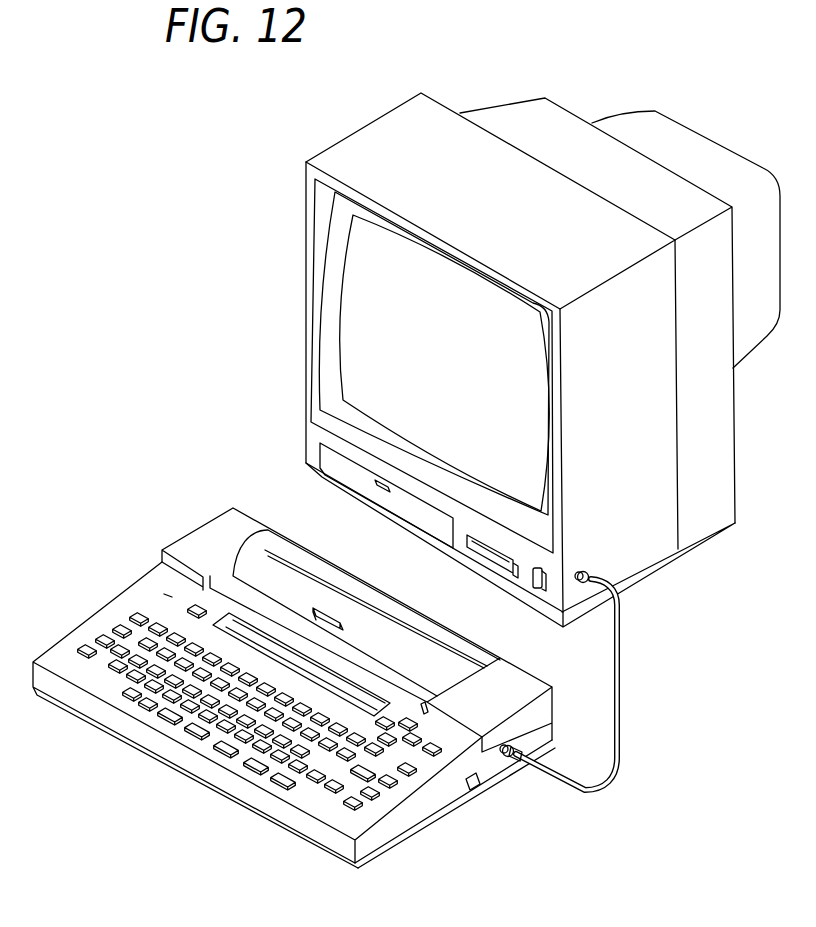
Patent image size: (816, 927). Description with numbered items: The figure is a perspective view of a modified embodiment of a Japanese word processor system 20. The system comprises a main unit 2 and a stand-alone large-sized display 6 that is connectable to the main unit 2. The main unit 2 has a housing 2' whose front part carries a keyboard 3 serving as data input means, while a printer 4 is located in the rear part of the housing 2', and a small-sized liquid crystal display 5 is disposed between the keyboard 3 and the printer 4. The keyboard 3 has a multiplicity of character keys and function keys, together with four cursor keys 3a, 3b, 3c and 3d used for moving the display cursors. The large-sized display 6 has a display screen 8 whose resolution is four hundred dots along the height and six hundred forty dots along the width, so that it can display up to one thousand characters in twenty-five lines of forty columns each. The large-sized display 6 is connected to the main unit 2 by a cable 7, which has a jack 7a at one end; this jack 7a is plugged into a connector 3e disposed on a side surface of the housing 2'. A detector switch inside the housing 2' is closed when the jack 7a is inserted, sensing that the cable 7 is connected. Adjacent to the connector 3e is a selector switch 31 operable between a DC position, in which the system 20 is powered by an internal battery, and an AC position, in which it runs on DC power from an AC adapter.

The main unit 2 is at (292, 688).
The housing 2' is at (455, 804).
The keyboard 3 is at (212, 753).
The cursor key 3a is at (414, 746).
The cursor key 3b is at (386, 717).
The cursor key 3c is at (410, 720).
The cursor key 3d is at (388, 745).
The connector 3e is at (508, 742).
The printer 4 is at (373, 617).
The liquid crystal display 5 is at (288, 655).
The large-sized display 6 is at (632, 563).
The cable 7 is at (616, 698).
The jack 7a is at (507, 762).
The display screen 8 is at (406, 331).
The word processor system 20 is at (650, 723).
The selector switch 31 is at (478, 791).